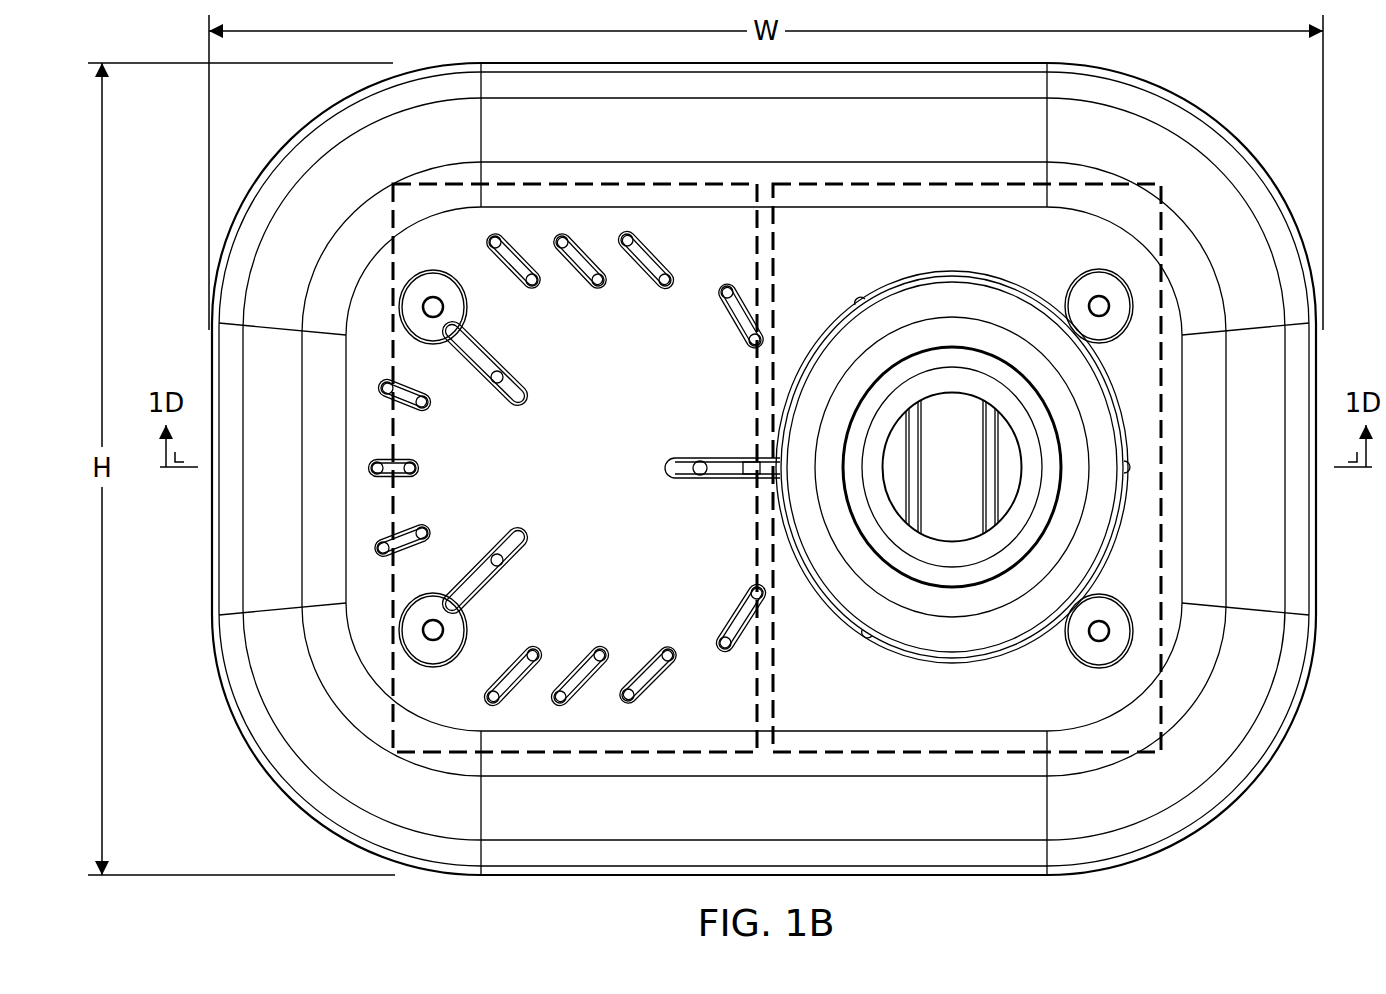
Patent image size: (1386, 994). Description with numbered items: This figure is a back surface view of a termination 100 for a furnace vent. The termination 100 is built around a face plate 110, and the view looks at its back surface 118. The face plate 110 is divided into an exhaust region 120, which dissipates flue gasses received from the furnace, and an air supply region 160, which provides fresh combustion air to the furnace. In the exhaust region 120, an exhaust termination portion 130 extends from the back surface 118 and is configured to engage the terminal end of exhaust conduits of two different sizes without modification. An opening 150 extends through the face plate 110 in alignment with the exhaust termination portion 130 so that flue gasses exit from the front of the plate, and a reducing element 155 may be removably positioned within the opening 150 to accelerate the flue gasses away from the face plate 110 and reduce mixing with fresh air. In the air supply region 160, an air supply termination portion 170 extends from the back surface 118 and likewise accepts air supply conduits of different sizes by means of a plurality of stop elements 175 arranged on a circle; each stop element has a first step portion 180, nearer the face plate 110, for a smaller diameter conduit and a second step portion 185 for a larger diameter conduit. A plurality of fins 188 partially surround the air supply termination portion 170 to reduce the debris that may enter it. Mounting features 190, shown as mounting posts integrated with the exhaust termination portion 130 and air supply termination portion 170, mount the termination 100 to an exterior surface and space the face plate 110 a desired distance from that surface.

The termination 100 is at (1245, 847).
The face plate 110 is at (228, 692).
The back surface 118 is at (285, 747).
The exhaust region 120 is at (980, 182).
The exhaust termination portion 130 is at (882, 660).
The opening 150 is at (931, 478).
The reducing element 155 is at (933, 380).
The air supply region 160 is at (577, 182).
The air supply termination portion 170 is at (534, 372).
The stop elements 175 is at (498, 356).
The first step portion 180 is at (528, 546).
The second step portion 185 is at (482, 577).
The fins 188 is at (643, 662).
The mounting features 190 is at (467, 282).